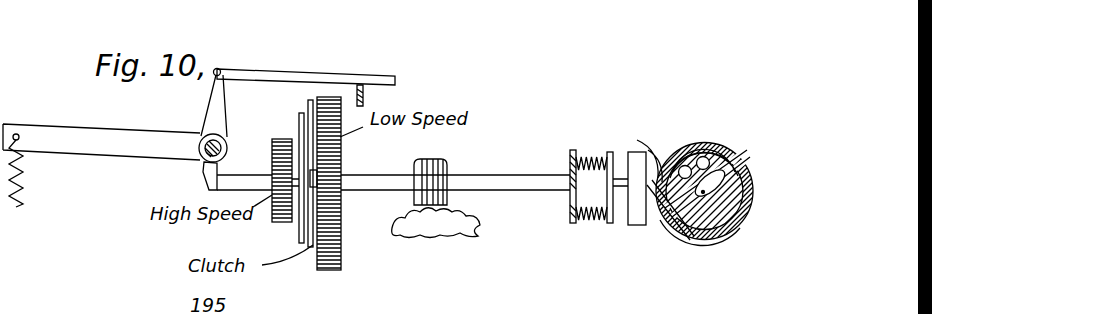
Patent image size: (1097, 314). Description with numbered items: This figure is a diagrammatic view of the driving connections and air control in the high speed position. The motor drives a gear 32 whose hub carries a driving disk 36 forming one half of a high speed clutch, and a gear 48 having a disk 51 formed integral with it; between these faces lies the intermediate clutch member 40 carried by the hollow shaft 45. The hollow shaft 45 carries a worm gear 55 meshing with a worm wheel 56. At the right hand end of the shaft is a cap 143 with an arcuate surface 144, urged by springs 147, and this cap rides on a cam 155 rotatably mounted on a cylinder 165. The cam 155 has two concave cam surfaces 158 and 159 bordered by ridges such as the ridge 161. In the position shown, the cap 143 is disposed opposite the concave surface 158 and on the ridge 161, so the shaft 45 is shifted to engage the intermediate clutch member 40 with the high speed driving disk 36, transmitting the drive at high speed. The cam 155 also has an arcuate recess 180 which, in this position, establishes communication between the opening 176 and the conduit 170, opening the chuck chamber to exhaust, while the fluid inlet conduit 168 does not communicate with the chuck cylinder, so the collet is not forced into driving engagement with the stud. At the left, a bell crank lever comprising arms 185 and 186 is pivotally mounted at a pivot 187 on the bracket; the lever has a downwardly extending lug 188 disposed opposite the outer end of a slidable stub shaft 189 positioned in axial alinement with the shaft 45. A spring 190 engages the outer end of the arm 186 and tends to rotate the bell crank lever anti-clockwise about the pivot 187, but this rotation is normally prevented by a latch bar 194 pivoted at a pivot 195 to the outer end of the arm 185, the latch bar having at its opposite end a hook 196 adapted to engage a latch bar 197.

The arm 186 is at (93, 132).
The spring 190 is at (20, 202).
The pivot 187 is at (202, 135).
The arm 185 is at (210, 102).
The pivot 195 is at (218, 69).
The latch bar 194 is at (276, 73).
The hook 196 is at (368, 84).
The latch bar 197 is at (364, 97).
The disk 51 is at (316, 97).
The lug 188 is at (195, 172).
The stub shaft 189 is at (207, 179).
The hollow shaft 45 is at (506, 182).
The gear 32 is at (273, 144).
The driving disk 36 is at (301, 118).
The intermediate clutch member 40 is at (309, 110).
The gear 48 is at (337, 97).
The worm gear 55 is at (448, 168).
The worm wheel 56 is at (480, 225).
The springs 147 is at (587, 155).
The cap 143 is at (632, 213).
The cylinder 165 is at (713, 233).
The concave cam surface 159 is at (682, 232).
The conduit 170 is at (705, 173).
The opening 176 is at (667, 168).
The recess 180 is at (703, 140).
The ridge 161 is at (660, 172).
The arcuate surface 144 is at (673, 218).
The concave cam surface 158 is at (678, 237).
The cam 155 is at (697, 237).
The conduit 168 is at (727, 220).